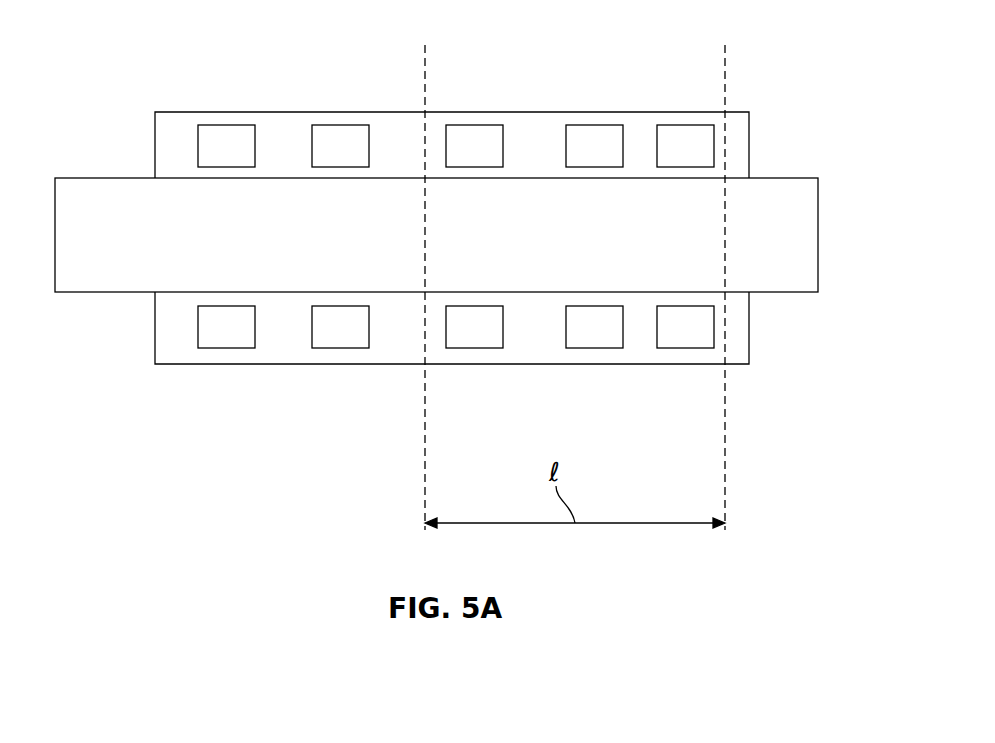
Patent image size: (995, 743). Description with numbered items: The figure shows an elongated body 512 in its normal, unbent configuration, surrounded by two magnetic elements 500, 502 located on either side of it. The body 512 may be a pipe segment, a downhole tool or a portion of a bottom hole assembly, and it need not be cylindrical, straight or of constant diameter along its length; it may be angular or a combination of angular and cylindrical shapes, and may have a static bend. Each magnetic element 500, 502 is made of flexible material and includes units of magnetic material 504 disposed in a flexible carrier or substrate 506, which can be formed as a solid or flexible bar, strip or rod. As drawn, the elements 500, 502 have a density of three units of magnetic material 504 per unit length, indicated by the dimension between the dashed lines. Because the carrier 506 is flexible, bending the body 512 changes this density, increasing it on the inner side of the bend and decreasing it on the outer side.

The magnetic element 500 is at (155, 146).
The magnetic element 502 is at (155, 328).
The magnetic material 504 is at (227, 125).
The flexible carrier/substrate 506 is at (407, 133).
The elongated body 512 is at (818, 236).